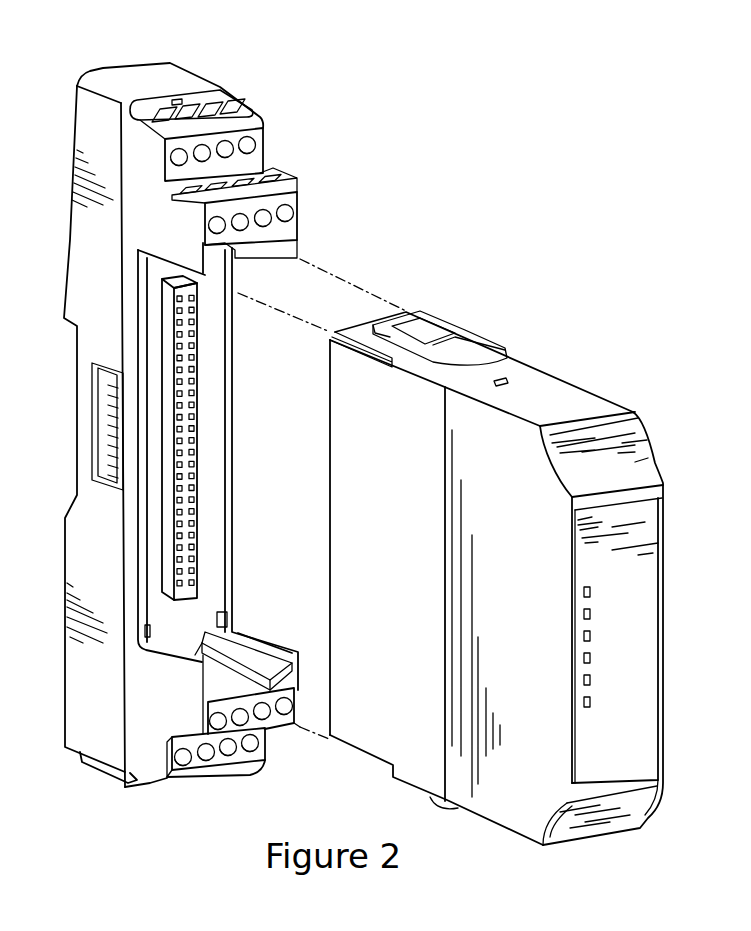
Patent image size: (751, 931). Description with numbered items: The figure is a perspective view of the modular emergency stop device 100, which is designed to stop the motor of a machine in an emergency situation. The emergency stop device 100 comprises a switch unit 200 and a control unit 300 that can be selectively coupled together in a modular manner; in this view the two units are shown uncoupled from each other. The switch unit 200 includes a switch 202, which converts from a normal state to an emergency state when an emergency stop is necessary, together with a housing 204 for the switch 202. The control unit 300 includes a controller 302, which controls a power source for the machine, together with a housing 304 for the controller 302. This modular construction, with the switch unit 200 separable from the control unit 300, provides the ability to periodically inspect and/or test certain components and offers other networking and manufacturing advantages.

The emergency stop device 100 is at (405, 210).
The switch unit 200 is at (588, 355).
The switch 202 is at (580, 403).
The housing 204 is at (648, 443).
The control unit 300 is at (280, 140).
The controller 302 is at (198, 357).
The housing 304 is at (212, 70).